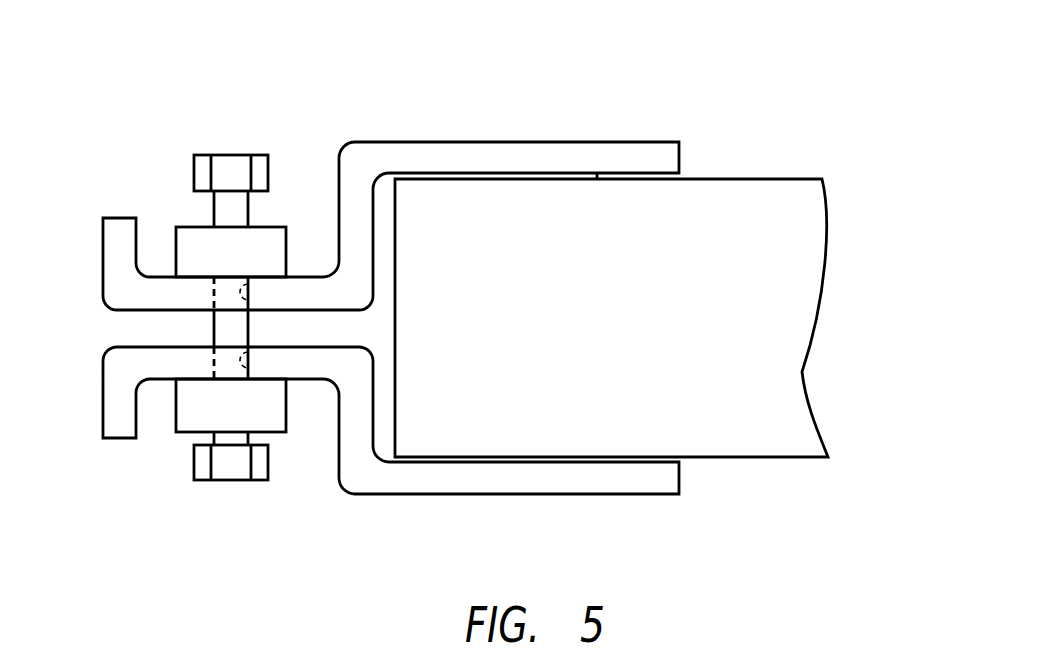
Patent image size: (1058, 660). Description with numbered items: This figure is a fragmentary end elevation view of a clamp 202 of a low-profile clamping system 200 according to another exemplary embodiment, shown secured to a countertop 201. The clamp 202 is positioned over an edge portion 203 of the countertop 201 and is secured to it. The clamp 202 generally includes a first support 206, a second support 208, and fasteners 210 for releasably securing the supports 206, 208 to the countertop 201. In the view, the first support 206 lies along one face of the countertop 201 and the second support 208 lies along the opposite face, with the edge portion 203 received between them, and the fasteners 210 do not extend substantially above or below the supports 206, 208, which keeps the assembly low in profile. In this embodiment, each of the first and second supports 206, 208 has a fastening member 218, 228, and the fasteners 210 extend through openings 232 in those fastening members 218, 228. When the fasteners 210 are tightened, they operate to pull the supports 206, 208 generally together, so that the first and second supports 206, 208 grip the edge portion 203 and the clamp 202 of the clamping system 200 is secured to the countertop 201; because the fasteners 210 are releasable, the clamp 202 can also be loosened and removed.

The low-profile clamping system 200 is at (146, 93).
The countertop 201 is at (834, 324).
The clamp 202 is at (106, 331).
The edge portion 203 is at (378, 453).
The first support 206 is at (556, 138).
The second support 208 is at (583, 500).
The fasteners 210 is at (232, 155).
The fastening member 218 is at (143, 287).
The fastening member 228 is at (145, 372).
The openings 232 is at (248, 300).